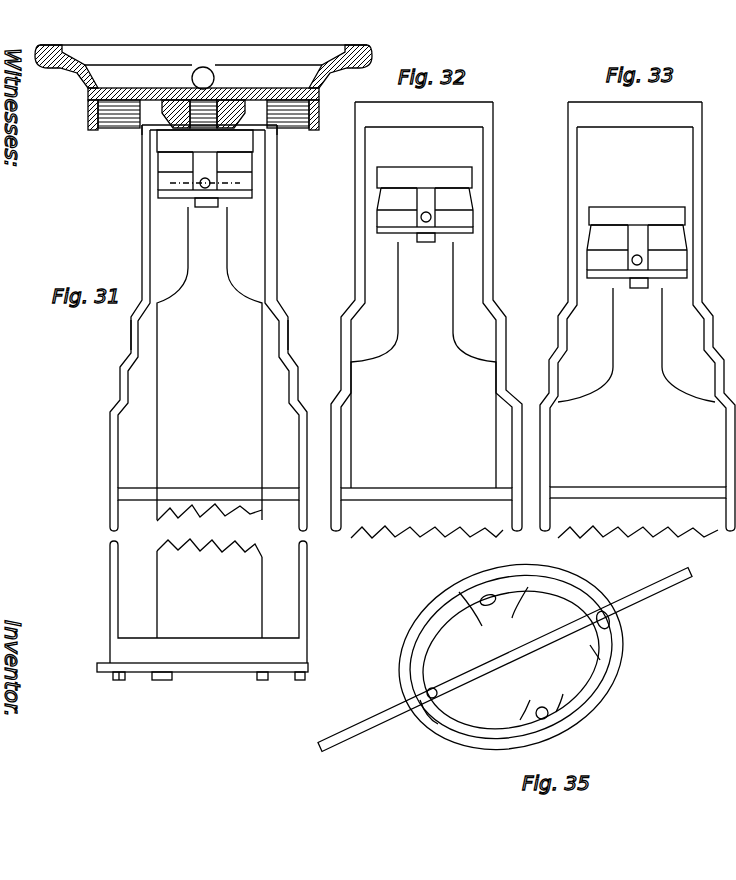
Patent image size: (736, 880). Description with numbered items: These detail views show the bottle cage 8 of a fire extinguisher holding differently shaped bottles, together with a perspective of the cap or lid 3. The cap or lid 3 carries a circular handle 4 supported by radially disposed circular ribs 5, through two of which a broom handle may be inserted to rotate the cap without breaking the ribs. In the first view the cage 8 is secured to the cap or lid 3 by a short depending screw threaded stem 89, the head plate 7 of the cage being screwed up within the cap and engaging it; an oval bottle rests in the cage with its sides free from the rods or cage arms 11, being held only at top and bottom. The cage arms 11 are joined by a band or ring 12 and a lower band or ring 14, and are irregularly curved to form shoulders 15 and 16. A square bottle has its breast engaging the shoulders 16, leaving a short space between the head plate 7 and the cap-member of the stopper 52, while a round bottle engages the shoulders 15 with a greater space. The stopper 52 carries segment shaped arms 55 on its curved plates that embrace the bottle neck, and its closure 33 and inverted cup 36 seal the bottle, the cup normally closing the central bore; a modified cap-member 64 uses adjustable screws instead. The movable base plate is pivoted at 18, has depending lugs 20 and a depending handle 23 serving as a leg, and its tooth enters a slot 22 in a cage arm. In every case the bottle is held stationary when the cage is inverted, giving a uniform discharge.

In FIG. 31, the cap or lid 3 is at (252, 92).
In FIG. 35, the cap or lid 3 is at (580, 714).
In FIG. 31, the circular handle 4 is at (148, 57).
In FIG. 35, the circular handle 4 is at (580, 580).
In FIG. 31, the circular ribs 5 is at (223, 75).
In FIG. 35, the circular ribs 5 is at (610, 634).
In FIG. 31, the head plate 7 is at (255, 115).
In FIG. 32, the head plate 7 is at (483, 113).
In FIG. 33, the head plate 7 is at (682, 113).
In FIG. 31, the bottle cage 8 is at (208, 394).
In FIG. 32, the bottle cage 8 is at (426, 320).
In FIG. 33, the bottle cage 8 is at (637, 320).
In FIG. 31, the rods or cage arms 11 is at (120, 338).
In FIG. 31, the band or ring 12 is at (215, 496).
In FIG. 32, the band or ring 12 is at (438, 488).
In FIG. 33, the band or ring 12 is at (630, 487).
In FIG. 31, the band or ring 14 is at (283, 651).
In FIG. 33, the shoulders 15 is at (556, 400).
In FIG. 32, the shoulders 16 is at (345, 360).
In FIG. 31, the pivot 18 is at (300, 680).
In FIG. 31, the depending lugs 20 is at (260, 681).
In FIG. 31, the slot 22 is at (114, 680).
In FIG. 31, the depending handle 23 is at (158, 681).
In FIG. 31, the bottle closure 33 is at (248, 185).
In FIG. 31, the inverted cup 36 is at (240, 165).
In FIG. 32, the stopper 52 is at (425, 192).
In FIG. 33, the stopper 52 is at (637, 235).
In FIG. 31, the segment shaped arms 55 is at (180, 197).
In FIG. 31, the cap-member 64 is at (180, 143).
In FIG. 31, the short depending screw threaded stem 89 is at (187, 127).